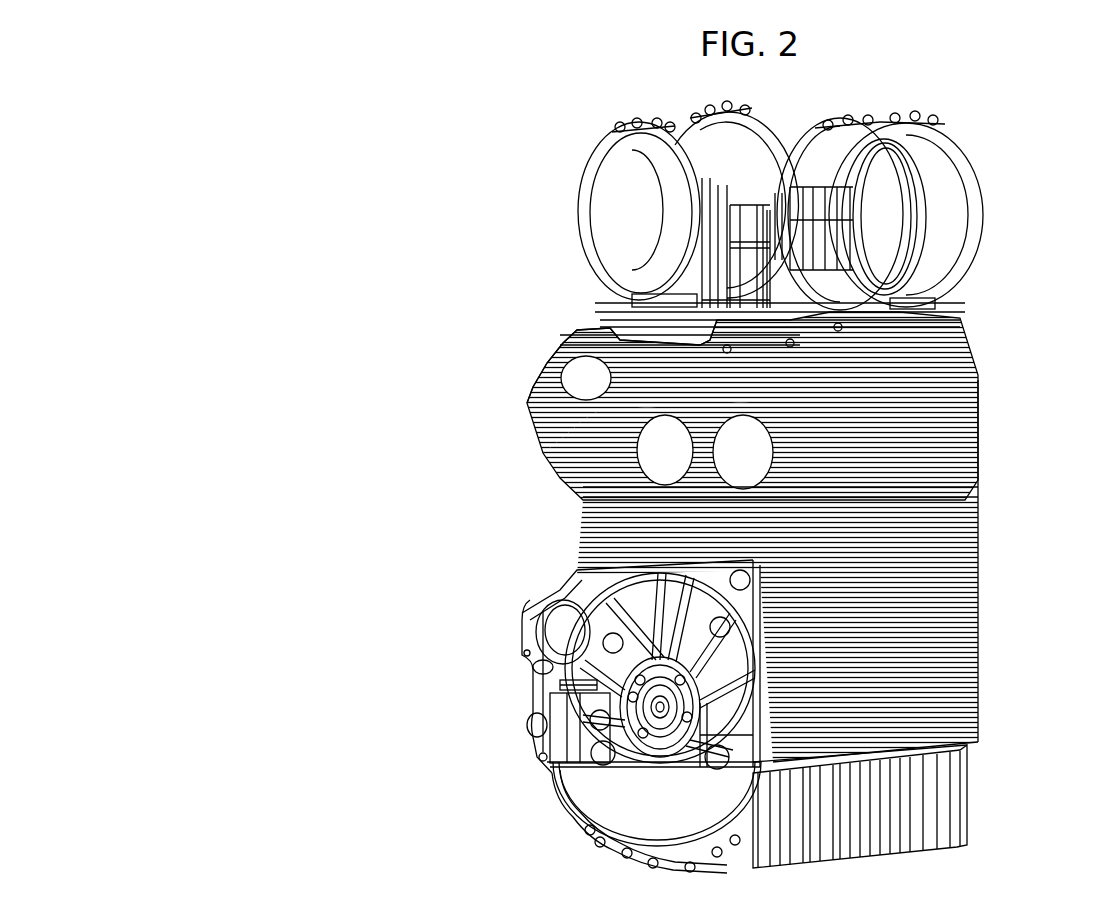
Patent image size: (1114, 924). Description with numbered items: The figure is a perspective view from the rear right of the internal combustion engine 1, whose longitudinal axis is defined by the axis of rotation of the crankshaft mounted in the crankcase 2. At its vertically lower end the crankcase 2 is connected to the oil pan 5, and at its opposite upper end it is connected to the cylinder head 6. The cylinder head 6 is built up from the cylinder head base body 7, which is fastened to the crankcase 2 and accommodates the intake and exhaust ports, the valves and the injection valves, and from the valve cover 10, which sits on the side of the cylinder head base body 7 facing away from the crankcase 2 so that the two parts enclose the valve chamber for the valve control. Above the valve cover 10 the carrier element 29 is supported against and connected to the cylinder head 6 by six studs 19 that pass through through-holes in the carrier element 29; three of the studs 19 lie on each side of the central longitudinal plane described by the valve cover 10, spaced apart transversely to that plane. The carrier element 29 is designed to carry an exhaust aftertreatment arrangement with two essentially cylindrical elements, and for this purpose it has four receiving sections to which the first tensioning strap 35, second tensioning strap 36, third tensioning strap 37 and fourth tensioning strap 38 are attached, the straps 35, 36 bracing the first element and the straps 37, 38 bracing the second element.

The internal combustion engine 1 is at (392, 193).
The crankcase 2 is at (927, 652).
The oil pan 5 is at (908, 815).
The cylinder head 6 is at (511, 418).
The cylinder head base body 7 is at (628, 455).
The valve cover 10 is at (570, 367).
The studs 19 is at (838, 325).
The carrier element 29 is at (827, 268).
The first tensioning strap 35 is at (713, 120).
The second tensioning strap 36 is at (588, 187).
The third tensioning strap 37 is at (930, 123).
The fourth tensioning strap 38 is at (918, 197).